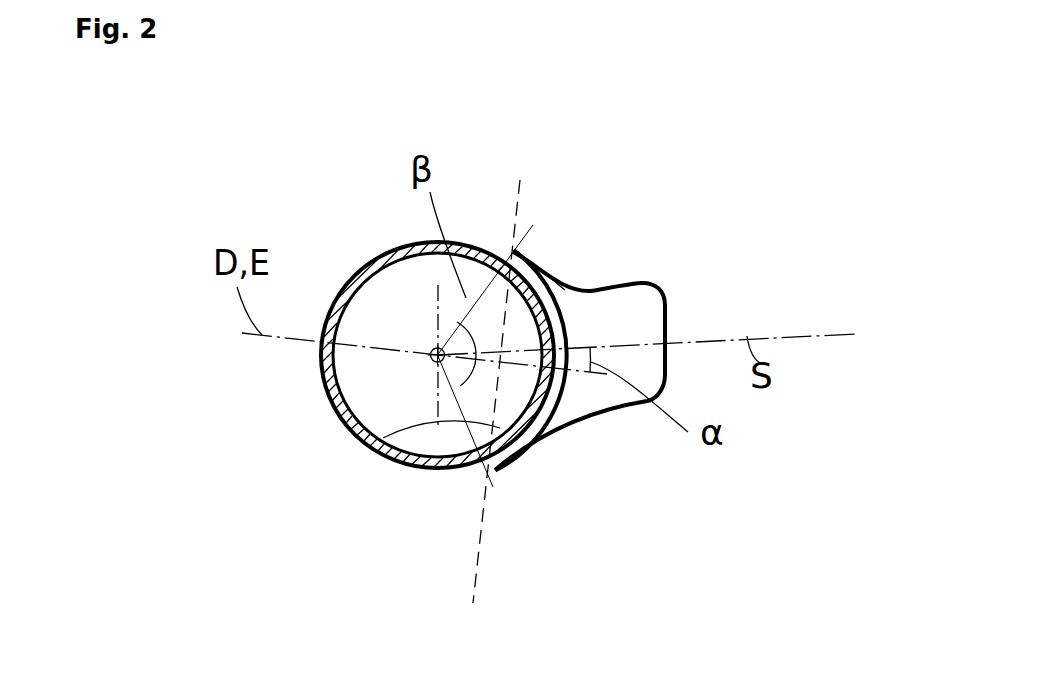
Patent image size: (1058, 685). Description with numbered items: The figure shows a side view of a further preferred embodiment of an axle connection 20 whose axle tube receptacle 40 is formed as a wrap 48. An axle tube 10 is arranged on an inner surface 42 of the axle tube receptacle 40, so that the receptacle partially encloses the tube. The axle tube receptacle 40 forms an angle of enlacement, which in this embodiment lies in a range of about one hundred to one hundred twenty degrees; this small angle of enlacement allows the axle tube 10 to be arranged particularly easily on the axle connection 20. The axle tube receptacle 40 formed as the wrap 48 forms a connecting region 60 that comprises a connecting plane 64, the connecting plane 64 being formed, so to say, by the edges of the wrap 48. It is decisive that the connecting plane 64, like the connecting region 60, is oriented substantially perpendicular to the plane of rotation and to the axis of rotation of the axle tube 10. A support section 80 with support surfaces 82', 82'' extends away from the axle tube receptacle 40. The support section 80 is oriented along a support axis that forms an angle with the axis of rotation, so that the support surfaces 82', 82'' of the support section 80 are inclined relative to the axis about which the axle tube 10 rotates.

The axle tube 10 is at (368, 260).
The axle connection 20 is at (662, 329).
The inner surface 42 is at (390, 435).
The connecting region 60 is at (505, 253).
The connecting plane 64 is at (473, 598).
The support section 80 is at (662, 335).
The support surface 82' is at (582, 351).
The support surface 82'' is at (735, 300).
The axle tube receptacle 40 is at (535, 423).
The wrap 48 is at (512, 470).